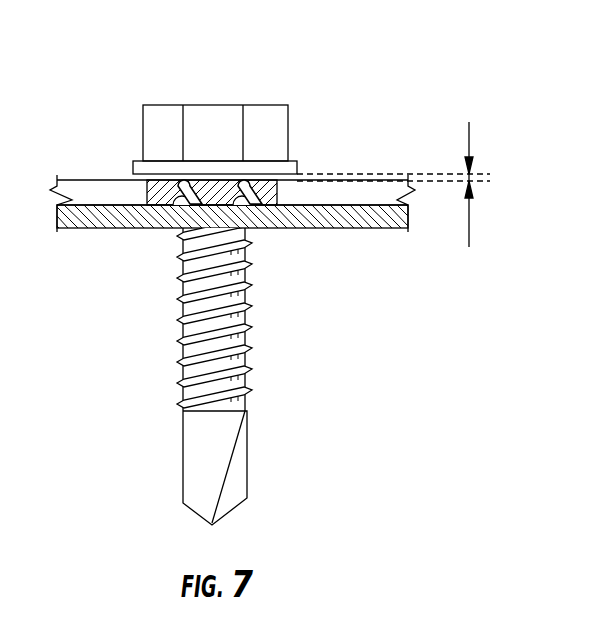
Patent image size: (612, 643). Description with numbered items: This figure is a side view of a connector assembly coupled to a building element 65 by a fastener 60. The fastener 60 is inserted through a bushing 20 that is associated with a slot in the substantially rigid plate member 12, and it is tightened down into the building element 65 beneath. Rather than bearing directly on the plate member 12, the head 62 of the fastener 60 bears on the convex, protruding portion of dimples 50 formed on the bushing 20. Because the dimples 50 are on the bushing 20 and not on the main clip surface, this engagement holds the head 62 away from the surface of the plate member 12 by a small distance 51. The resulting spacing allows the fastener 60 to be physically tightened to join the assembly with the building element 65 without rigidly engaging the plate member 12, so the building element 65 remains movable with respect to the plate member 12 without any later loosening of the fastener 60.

The plate member 12 is at (355, 190).
The bushing 20 is at (272, 190).
The dimples 50 is at (175, 180).
The small distance 51 is at (471, 140).
The fastener 60 is at (172, 288).
The head 62 is at (210, 105).
The building element 65 is at (337, 222).